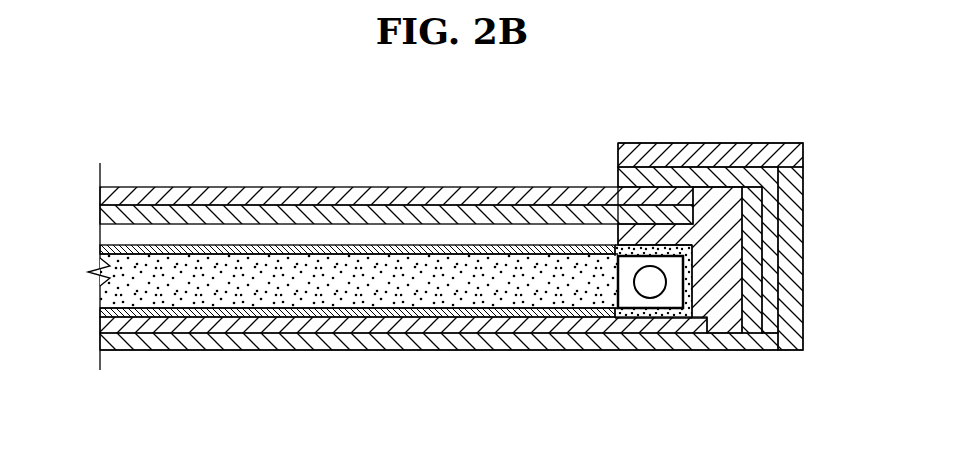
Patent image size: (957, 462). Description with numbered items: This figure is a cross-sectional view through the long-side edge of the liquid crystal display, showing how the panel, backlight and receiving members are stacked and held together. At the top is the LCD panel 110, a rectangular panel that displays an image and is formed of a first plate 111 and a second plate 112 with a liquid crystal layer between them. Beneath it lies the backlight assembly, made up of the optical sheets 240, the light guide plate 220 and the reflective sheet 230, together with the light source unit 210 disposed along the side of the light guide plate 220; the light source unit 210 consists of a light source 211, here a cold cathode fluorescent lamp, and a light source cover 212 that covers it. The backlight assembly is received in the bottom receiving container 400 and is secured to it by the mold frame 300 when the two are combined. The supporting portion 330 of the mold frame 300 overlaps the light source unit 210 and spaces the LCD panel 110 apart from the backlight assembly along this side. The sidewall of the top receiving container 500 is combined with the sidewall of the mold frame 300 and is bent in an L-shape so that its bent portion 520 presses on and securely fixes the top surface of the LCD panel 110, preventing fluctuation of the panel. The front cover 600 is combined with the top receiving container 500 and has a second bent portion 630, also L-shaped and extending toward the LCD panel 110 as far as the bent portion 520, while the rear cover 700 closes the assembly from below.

The LCD panel 110 is at (396, 149).
The first plate 111 is at (165, 210).
The second plate 112 is at (160, 113).
The optical sheets 240 is at (100, 248).
The light guide plate 220 is at (105, 297).
The reflective sheet 230 is at (100, 315).
The bottom receiving container 400 is at (273, 322).
The rear cover 700 is at (203, 340).
The mold frame 300 is at (690, 252).
The supporting portion 330 is at (633, 235).
The top receiving container 500 is at (752, 195).
The bent portion 520 is at (695, 176).
The front cover 600 is at (780, 288).
The second bent portion 630 is at (776, 157).
The light source unit 210 is at (652, 348).
The light source 211 is at (648, 288).
The light source cover 212 is at (662, 315).